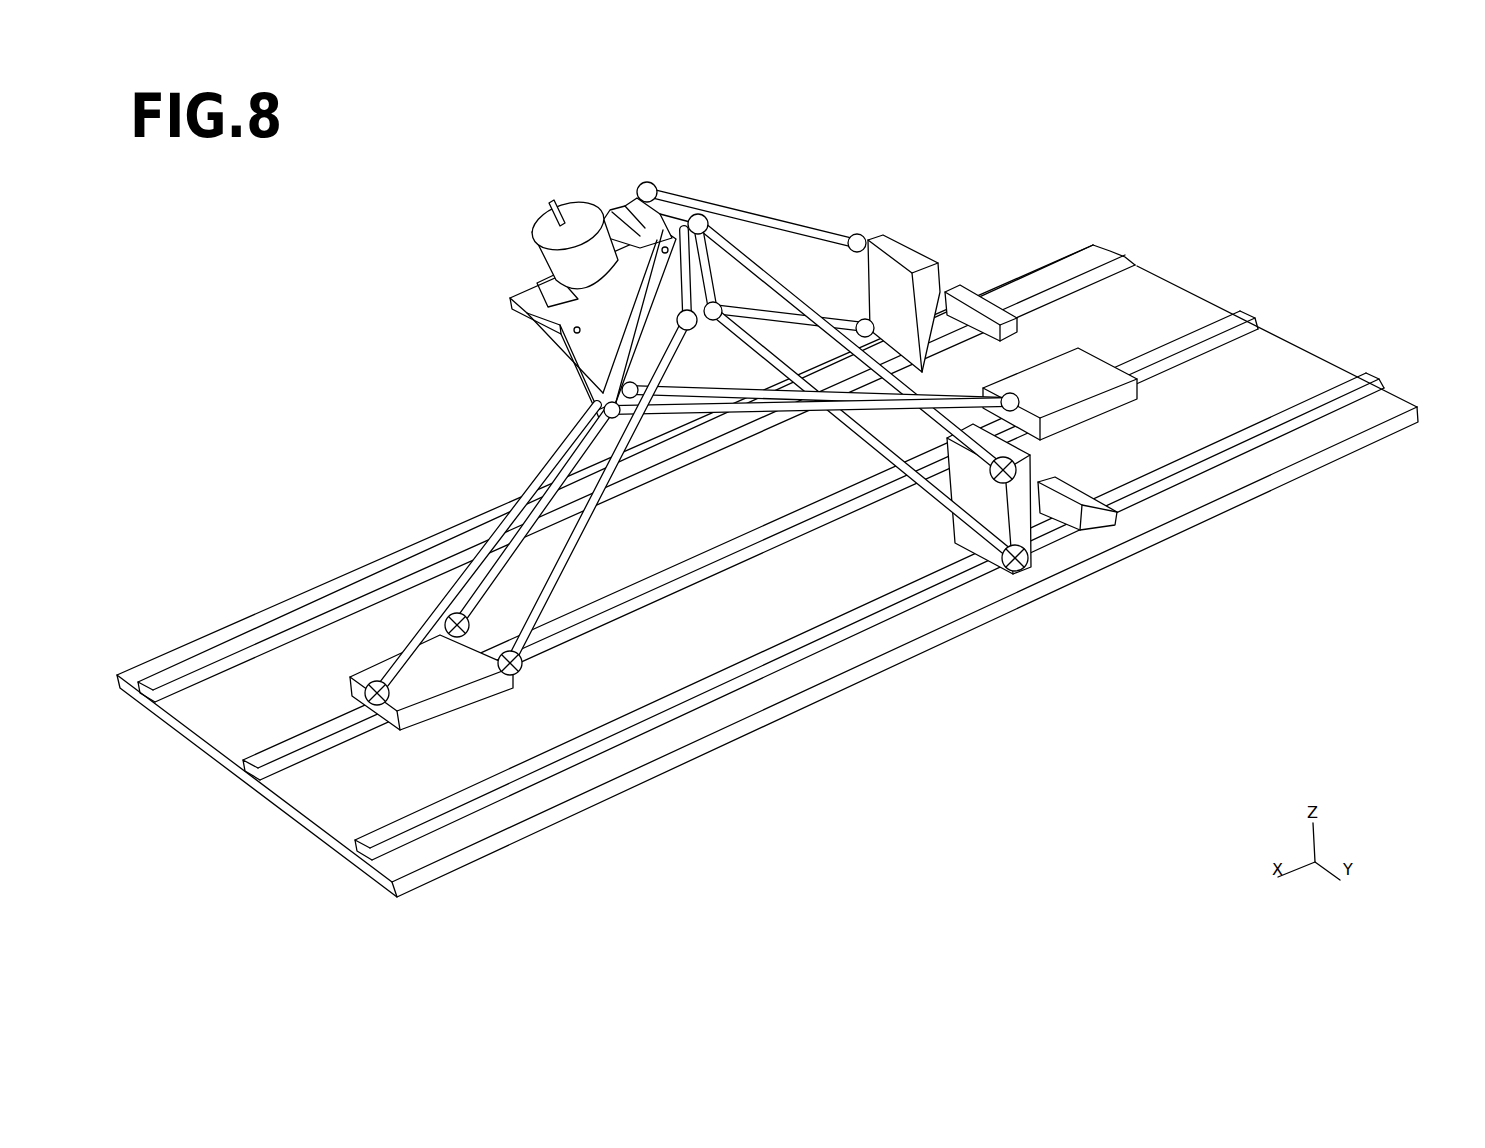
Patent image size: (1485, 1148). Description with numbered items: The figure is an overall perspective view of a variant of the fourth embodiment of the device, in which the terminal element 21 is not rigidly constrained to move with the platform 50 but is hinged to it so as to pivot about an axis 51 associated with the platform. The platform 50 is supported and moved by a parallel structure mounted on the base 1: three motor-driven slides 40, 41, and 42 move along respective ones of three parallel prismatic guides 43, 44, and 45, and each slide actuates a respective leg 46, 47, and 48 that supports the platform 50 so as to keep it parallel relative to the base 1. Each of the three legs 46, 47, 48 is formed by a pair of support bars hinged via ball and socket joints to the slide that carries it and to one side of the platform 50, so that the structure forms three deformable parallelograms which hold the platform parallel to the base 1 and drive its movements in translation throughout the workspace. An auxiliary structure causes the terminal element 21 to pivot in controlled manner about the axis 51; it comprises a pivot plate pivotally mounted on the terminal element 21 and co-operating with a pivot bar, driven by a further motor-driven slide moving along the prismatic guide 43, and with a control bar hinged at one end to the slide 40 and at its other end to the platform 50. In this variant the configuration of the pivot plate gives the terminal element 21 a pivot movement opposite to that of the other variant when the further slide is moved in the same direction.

The base 1 is at (240, 725).
The terminal element 21 is at (547, 259).
The motor-driven slide 40 is at (428, 713).
The motor-driven slide 41 is at (1060, 552).
The motor-driven slide 42 is at (960, 297).
The prismatic guide 43 is at (1245, 318).
The prismatic guide 44 is at (1377, 375).
The prismatic guide 45 is at (1128, 253).
The leg 46 is at (550, 436).
The leg 47 is at (853, 433).
The leg 48 is at (768, 225).
The platform 50 is at (640, 200).
The axis 51 is at (672, 248).